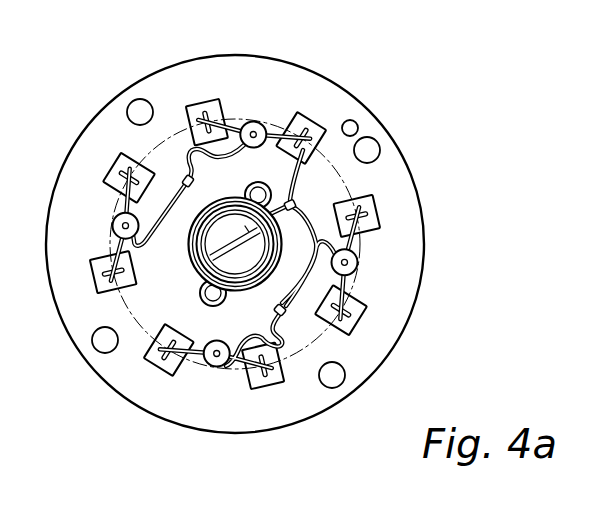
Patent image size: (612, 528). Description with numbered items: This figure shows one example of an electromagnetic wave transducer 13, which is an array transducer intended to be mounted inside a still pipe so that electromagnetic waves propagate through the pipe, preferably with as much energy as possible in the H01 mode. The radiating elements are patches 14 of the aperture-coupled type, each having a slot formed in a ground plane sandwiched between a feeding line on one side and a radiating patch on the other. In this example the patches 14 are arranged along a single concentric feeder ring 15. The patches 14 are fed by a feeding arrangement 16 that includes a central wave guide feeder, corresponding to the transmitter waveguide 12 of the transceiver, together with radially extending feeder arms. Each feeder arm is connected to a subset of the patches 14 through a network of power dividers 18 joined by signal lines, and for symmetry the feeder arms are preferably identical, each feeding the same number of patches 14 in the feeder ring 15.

The transmitter waveguide 12 is at (204, 272).
The electromagnetic wave transducer 13 is at (373, 114).
The patches 14 is at (372, 196).
The feeder ring 15 is at (317, 336).
The feeding arrangement 16 is at (297, 342).
The power dividers 18 is at (258, 127).